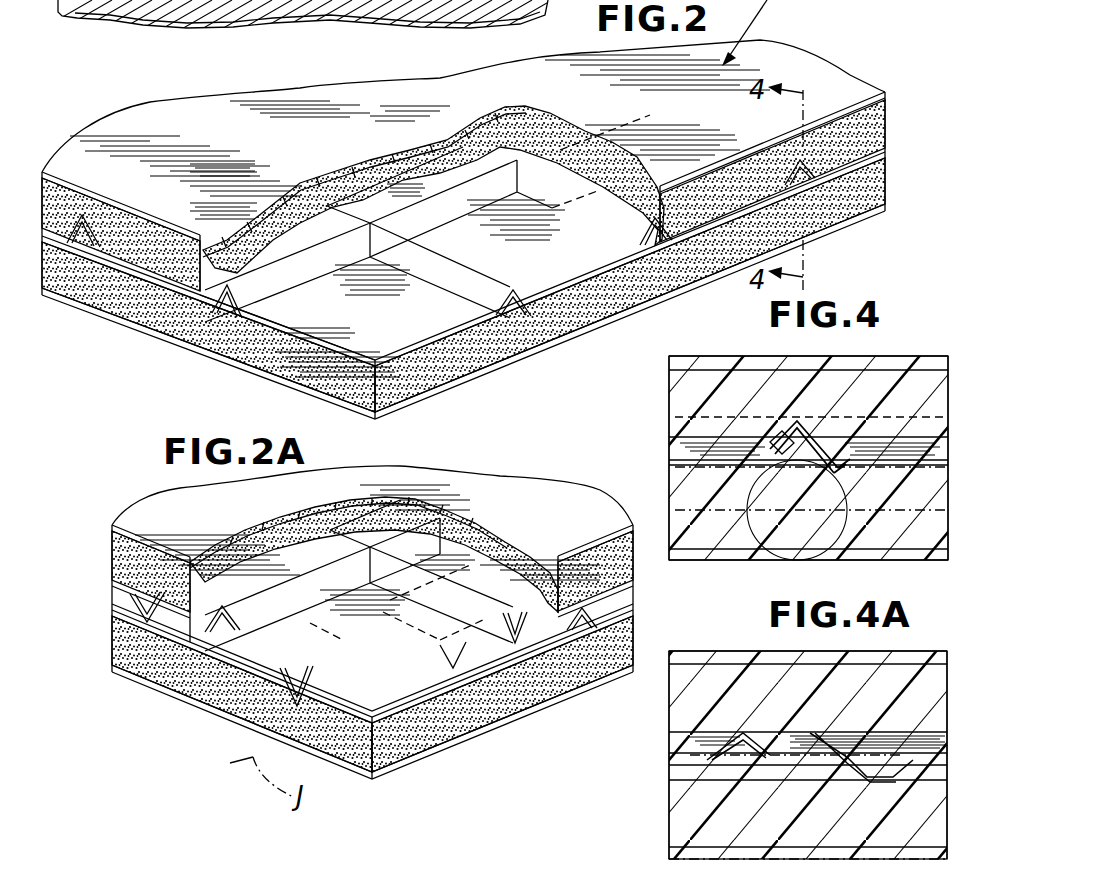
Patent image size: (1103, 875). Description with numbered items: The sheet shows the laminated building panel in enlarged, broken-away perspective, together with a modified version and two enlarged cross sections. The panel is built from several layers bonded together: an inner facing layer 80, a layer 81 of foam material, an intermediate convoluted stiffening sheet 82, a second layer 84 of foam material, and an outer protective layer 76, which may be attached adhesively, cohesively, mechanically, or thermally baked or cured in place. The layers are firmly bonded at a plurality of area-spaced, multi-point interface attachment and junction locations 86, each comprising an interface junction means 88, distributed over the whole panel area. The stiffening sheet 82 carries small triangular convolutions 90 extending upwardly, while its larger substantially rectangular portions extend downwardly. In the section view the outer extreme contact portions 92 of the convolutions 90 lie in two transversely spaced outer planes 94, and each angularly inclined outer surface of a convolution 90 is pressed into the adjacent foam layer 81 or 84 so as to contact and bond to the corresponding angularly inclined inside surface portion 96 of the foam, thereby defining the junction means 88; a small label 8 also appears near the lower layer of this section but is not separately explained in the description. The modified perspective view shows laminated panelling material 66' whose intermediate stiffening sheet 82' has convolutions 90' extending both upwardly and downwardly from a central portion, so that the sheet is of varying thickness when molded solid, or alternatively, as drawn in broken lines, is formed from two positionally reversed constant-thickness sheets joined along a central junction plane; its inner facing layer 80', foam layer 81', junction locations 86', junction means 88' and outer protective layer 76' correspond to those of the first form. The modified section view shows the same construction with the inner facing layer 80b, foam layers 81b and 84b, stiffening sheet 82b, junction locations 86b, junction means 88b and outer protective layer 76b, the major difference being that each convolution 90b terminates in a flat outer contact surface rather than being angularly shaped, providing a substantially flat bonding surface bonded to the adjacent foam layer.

In FIG. 2, the inner facing layer 80 is at (474, 188).
In FIG. 4, the inner facing layer 80 is at (819, 316).
In FIG. 2, the layer of foam material 81 is at (495, 143).
In FIG. 4, the layer of foam material 81 is at (783, 378).
In FIG. 2, the intermediate stiffening sheet 82 is at (493, 195).
In FIG. 4, the intermediate stiffening sheet 82 is at (774, 424).
In FIG. 2, the layer of foam material 84 is at (887, 175).
In FIG. 4, the layer of foam material 84 is at (673, 530).
In FIG. 2, the outer protective layer 76 is at (506, 302).
In FIG. 4, the outer protective layer 76 is at (808, 554).
In FIG. 2, the interface attachment and junction locations 86 is at (441, 224).
In FIG. 4, the interface attachment and junction locations 86 is at (861, 468).
In FIG. 2, the interface junction means 88 is at (504, 237).
In FIG. 4, the interface junction means 88 is at (840, 432).
In FIG. 2, the convolutions 90 is at (428, 254).
In FIG. 4, the convolutions 90 is at (733, 378).
In FIG. 4, the outer extreme contact portions 92 is at (803, 425).
In FIG. 4, the outer planes 94 is at (670, 417).
In FIG. 4, the angularly inclined inside surface portion 96 is at (945, 385).
In FIG. 4, the detail region 8 is at (846, 549).
In FIG. 4, the inner facing layer 80b is at (783, 558).
In FIG. 2A, the inner facing layer 80' is at (372, 519).
In FIG. 2A, the layer of foam material 81' is at (372, 514).
In FIG. 2A, the intermediate stiffening sheet 82' is at (348, 604).
In FIG. 2A, the interface attachment and junction locations 86' is at (354, 642).
In FIG. 2A, the interface junction means 88' is at (361, 653).
In FIG. 2A, the convolutions 90' is at (378, 665).
In FIG. 2A, the laminated panelling material 66' is at (624, 511).
In FIG. 2A, the outer protective layer 76' is at (372, 752).
In FIG. 4A, the layer of foam material 81b is at (877, 680).
In FIG. 4A, the intermediate stiffening sheet 82b is at (700, 755).
In FIG. 4A, the interface attachment and junction locations 86b is at (700, 738).
In FIG. 4A, the convolutions 90b is at (672, 796).
In FIG. 4A, the layer of foam material 84b is at (672, 810).
In FIG. 4A, the interface junction means 88b is at (672, 832).
In FIG. 4A, the outer protective layer 76b is at (672, 858).